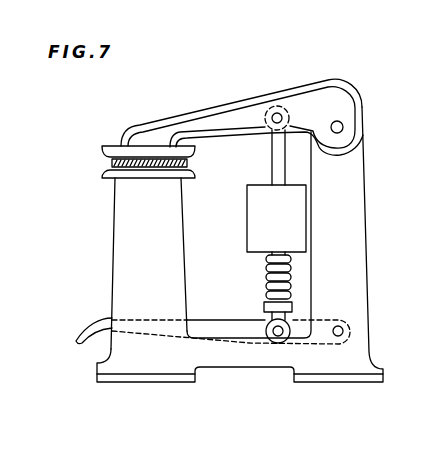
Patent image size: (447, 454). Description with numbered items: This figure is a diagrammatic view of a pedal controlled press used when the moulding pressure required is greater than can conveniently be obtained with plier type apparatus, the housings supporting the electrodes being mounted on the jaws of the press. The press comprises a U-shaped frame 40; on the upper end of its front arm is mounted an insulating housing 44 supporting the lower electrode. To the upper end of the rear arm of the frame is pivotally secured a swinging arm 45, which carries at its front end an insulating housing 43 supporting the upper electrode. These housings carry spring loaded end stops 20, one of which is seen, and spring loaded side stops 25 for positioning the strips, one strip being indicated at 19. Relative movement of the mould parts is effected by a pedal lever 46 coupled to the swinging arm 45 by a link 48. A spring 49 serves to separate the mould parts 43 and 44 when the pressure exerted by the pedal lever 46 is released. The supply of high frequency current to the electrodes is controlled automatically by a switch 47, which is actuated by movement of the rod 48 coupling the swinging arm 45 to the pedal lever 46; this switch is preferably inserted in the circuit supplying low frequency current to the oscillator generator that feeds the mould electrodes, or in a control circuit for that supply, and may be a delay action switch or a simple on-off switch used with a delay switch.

The strip 19 is at (159, 170).
The spring loaded end stop 20 is at (162, 158).
The spring loaded side stop 25 is at (110, 163).
The U-shaped frame 40 is at (185, 360).
The insulating housing 43 is at (113, 148).
The insulating housing 44 is at (117, 179).
The swinging arm 45 is at (244, 100).
The pedal lever 46 is at (87, 327).
The switch 47 is at (284, 202).
The link 48 is at (276, 155).
The spring 49 is at (265, 282).